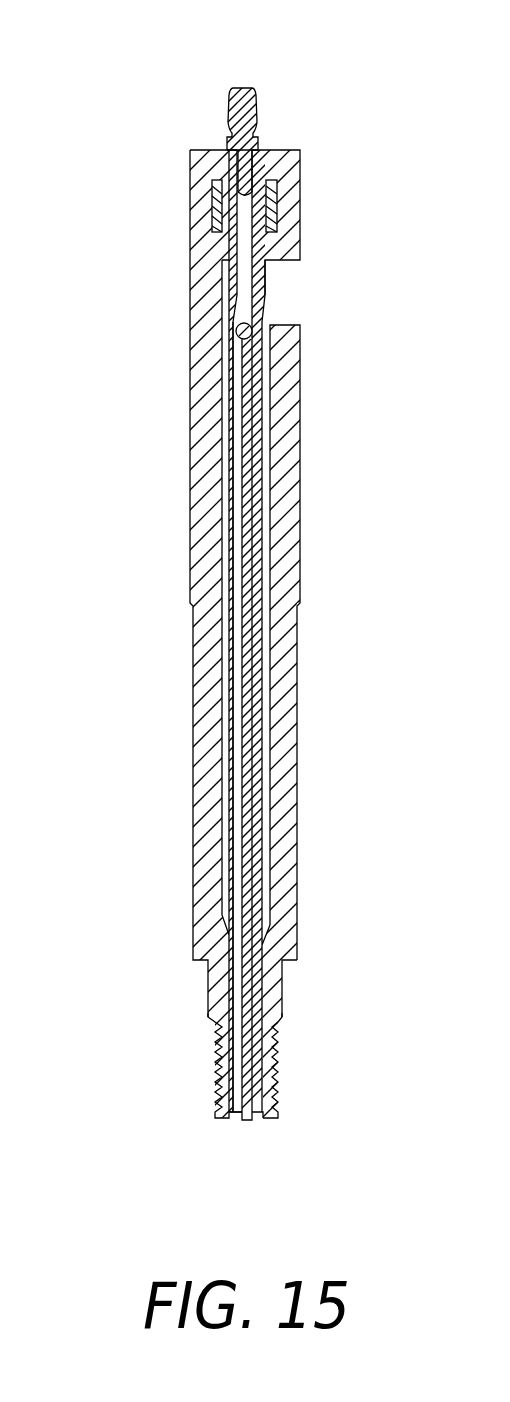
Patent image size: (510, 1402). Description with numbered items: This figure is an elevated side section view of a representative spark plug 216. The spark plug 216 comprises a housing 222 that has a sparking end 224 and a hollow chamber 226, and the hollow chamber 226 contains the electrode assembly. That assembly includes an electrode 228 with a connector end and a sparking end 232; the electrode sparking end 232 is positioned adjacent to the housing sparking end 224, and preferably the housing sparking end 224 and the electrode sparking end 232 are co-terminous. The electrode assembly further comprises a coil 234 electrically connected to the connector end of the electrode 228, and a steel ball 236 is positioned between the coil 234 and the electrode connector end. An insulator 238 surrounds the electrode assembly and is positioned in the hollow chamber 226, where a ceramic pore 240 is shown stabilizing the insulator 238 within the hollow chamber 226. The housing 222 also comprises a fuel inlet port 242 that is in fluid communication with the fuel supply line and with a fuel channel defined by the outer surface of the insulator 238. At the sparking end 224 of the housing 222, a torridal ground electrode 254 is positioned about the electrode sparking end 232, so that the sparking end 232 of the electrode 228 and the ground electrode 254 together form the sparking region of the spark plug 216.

The spark plug 216 is at (116, 73).
The housing 222 is at (197, 598).
The sparking end 224 is at (267, 1134).
The hollow chamber 226 is at (272, 820).
The electrode 228 is at (243, 438).
The sparking end 232 is at (246, 1121).
The coil 234 is at (248, 197).
The steel ball 236 is at (238, 335).
The insulator 238 is at (237, 542).
The ceramic pore 240 is at (283, 198).
The fuel inlet port 242 is at (285, 287).
The torridal ground electrode 254 is at (232, 1119).